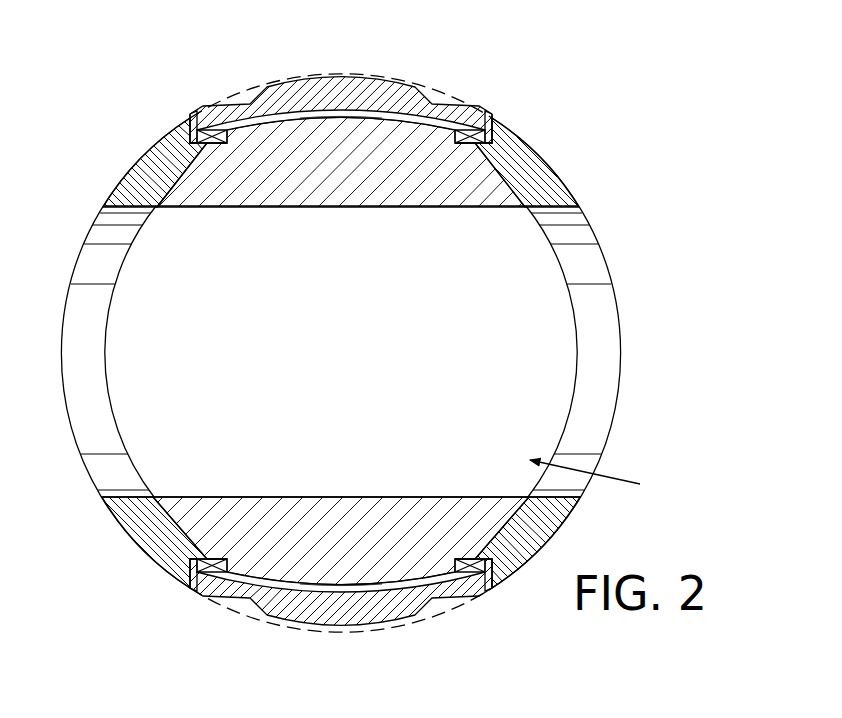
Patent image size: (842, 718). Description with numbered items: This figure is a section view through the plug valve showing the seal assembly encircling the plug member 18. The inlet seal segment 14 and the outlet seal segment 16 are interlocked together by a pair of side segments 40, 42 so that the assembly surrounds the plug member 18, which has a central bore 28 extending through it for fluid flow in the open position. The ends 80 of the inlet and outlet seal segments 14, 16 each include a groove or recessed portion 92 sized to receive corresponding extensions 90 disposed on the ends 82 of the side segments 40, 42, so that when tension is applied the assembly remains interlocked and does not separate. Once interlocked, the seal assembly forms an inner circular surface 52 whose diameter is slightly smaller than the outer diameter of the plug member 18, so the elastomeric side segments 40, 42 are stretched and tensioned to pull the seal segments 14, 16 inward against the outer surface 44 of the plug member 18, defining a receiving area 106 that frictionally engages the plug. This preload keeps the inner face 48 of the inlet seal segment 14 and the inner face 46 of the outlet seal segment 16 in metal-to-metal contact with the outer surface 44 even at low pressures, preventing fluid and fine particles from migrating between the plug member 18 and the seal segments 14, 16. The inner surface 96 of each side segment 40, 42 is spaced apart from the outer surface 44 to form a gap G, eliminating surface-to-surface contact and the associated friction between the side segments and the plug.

The inlet seal segment 14 is at (558, 176).
The outlet seal segment 16 is at (124, 176).
The plug member 18 is at (502, 198).
The central bore 28 is at (271, 208).
The side segment 40 is at (356, 74).
The side segment 42 is at (332, 626).
The outer surface 44 is at (150, 158).
The inner face 46 is at (170, 192).
The inner face 48 is at (492, 178).
The inner circular surface 52 is at (307, 122).
The ends 80 is at (184, 117).
The ends 82 is at (196, 108).
The extensions 90 is at (224, 148).
The recessed portion 92 is at (222, 138).
The inner surface 96 is at (386, 122).
The receiving area 106 is at (607, 479).
The gap G is at (342, 120).